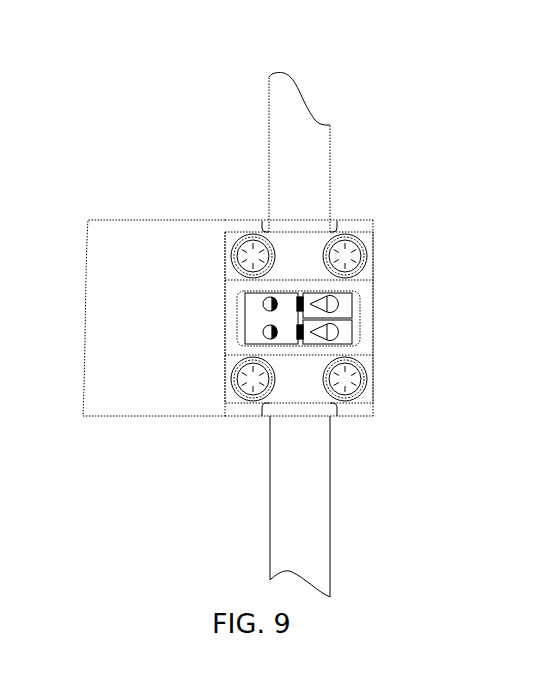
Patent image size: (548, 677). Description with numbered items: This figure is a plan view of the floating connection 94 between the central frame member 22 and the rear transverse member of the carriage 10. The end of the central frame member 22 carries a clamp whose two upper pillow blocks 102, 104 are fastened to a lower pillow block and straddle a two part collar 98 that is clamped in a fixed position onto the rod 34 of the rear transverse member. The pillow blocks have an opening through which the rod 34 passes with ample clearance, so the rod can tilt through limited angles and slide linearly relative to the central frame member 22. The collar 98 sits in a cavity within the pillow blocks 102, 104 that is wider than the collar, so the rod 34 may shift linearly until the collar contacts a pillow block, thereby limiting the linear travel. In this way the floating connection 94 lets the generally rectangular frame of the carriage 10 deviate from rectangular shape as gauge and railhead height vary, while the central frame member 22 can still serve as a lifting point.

The central frame member 22 is at (110, 222).
The floating connection 94 is at (237, 142).
The rod 34 is at (331, 505).
The upper pillow block 102 is at (300, 245).
The upper pillow block 104 is at (369, 383).
The two part collar 98 is at (347, 332).
The carriage 10 is at (225, 278).